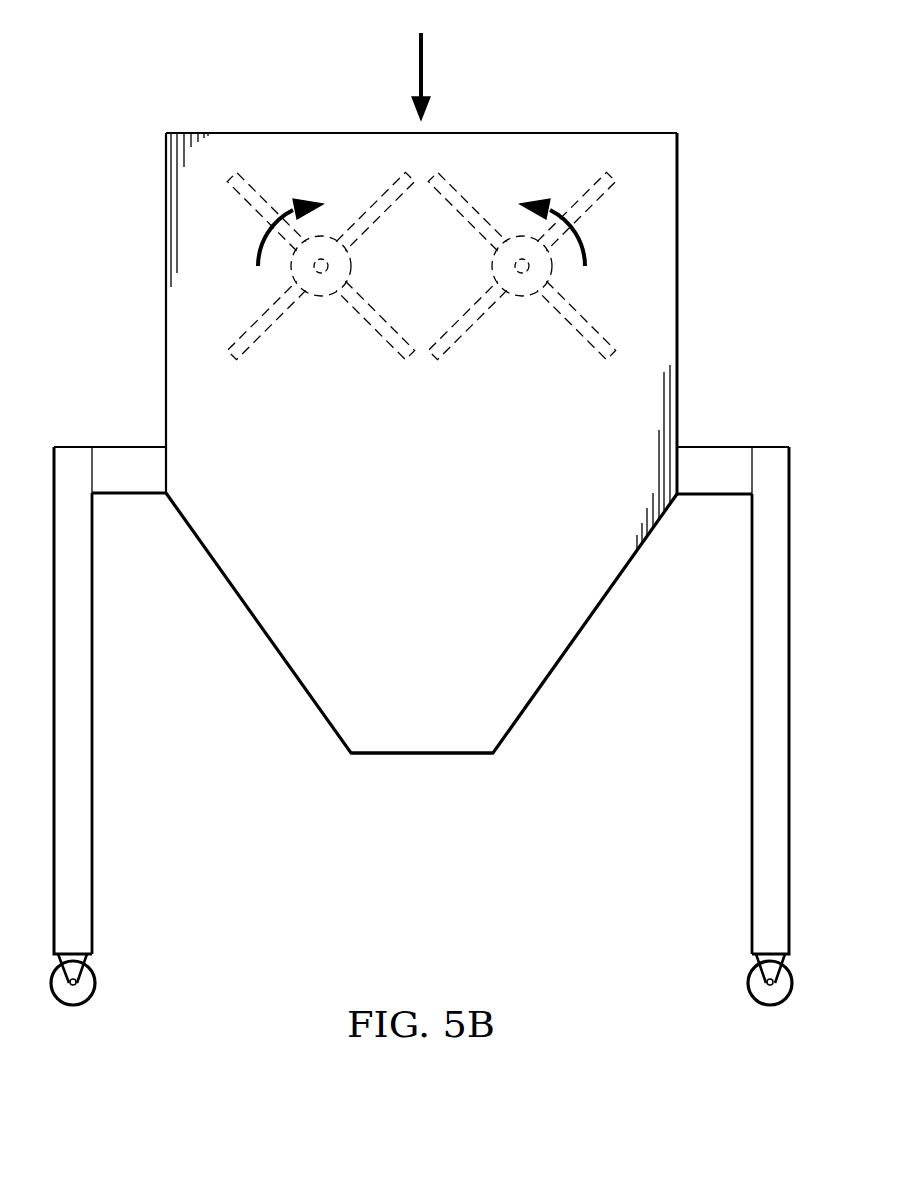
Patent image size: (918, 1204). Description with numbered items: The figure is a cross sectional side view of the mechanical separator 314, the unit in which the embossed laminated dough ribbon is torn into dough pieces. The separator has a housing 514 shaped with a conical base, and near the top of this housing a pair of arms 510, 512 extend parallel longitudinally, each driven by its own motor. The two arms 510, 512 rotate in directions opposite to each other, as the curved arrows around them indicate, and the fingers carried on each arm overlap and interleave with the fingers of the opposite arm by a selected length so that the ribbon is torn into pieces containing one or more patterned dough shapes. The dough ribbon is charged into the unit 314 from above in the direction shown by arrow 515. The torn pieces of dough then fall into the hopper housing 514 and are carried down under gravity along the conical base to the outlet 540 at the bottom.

The mechanical separator 314 is at (706, 92).
The housing 514 is at (152, 210).
The arrow 515 is at (418, 60).
The arm 510 is at (523, 305).
The arm 512 is at (320, 305).
The outlet 540 is at (434, 766).